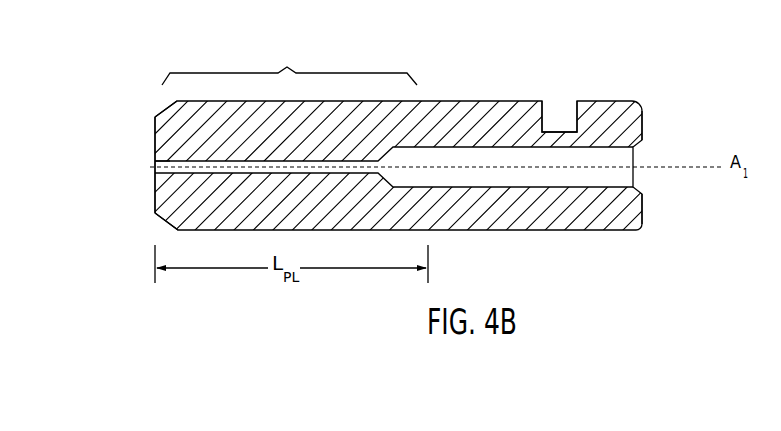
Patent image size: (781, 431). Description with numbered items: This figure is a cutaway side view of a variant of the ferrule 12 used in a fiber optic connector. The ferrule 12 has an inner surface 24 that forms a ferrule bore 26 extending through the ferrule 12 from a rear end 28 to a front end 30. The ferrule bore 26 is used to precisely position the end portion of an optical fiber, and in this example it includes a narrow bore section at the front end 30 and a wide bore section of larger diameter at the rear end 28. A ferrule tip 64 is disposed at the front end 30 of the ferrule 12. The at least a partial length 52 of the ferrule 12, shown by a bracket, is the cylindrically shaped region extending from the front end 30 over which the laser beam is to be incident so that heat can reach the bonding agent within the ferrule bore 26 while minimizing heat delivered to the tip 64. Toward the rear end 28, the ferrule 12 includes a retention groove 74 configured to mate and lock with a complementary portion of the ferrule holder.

The ferrule 12 is at (453, 92).
The inner surface 24 is at (154, 175).
The ferrule bore 26 is at (168, 164).
The rear end 28 is at (669, 203).
The front end 30 is at (120, 226).
The partial length 52 is at (289, 62).
The ferrule tip 64 is at (160, 110).
The retention groove 74 is at (547, 113).